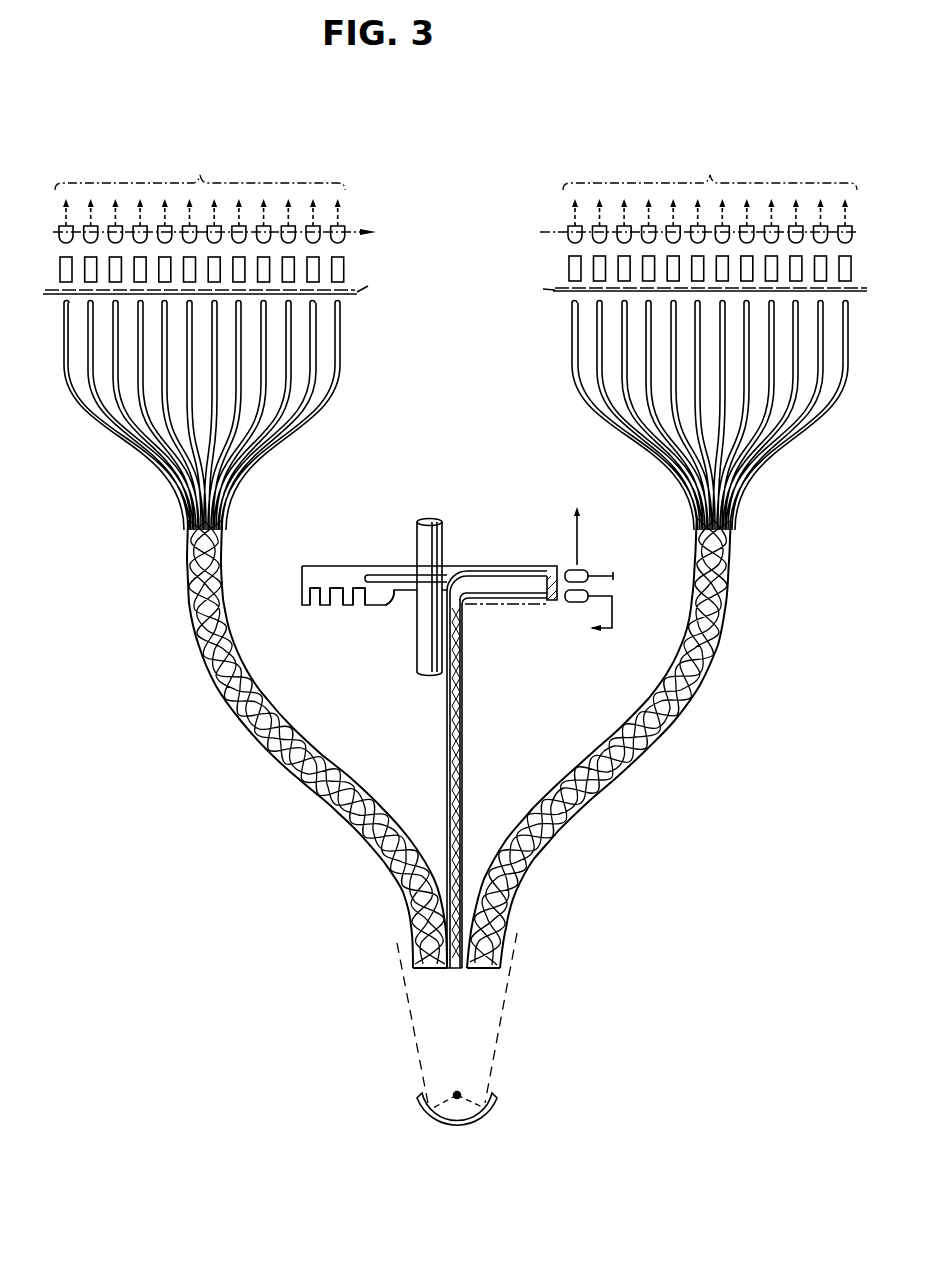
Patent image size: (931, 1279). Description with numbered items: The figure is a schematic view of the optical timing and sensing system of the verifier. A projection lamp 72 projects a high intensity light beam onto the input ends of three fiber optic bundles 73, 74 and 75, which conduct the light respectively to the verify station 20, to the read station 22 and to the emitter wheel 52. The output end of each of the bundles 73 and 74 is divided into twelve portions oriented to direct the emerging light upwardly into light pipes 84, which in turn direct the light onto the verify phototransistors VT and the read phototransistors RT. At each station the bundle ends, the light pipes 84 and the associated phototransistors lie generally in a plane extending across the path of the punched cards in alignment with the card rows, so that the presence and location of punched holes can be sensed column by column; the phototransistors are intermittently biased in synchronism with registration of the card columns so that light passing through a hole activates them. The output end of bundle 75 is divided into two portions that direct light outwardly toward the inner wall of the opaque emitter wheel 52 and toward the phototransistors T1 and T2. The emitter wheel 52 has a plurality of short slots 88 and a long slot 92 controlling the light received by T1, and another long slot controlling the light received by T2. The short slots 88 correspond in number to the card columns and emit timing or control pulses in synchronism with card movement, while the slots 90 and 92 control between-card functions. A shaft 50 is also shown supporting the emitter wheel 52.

The verify station 20 is at (792, 468).
The read station 22 is at (99, 452).
The shaft 50 is at (443, 548).
The emitter wheel 52 is at (345, 568).
The projection lamp 72 is at (497, 1102).
The fiber optic bundle 73 is at (638, 757).
The fiber optic bundle 74 is at (230, 705).
The fiber optic bundle 75 is at (450, 728).
The light pipes 84 is at (338, 268).
The short slots 88 is at (313, 606).
The slot 90 is at (379, 581).
The long slot 92 is at (397, 600).
The read phototransistors RT is at (340, 227).
The verify phototransistors VT is at (598, 230).
The phototransistor T1 is at (586, 599).
The phototransistor T2 is at (585, 569).